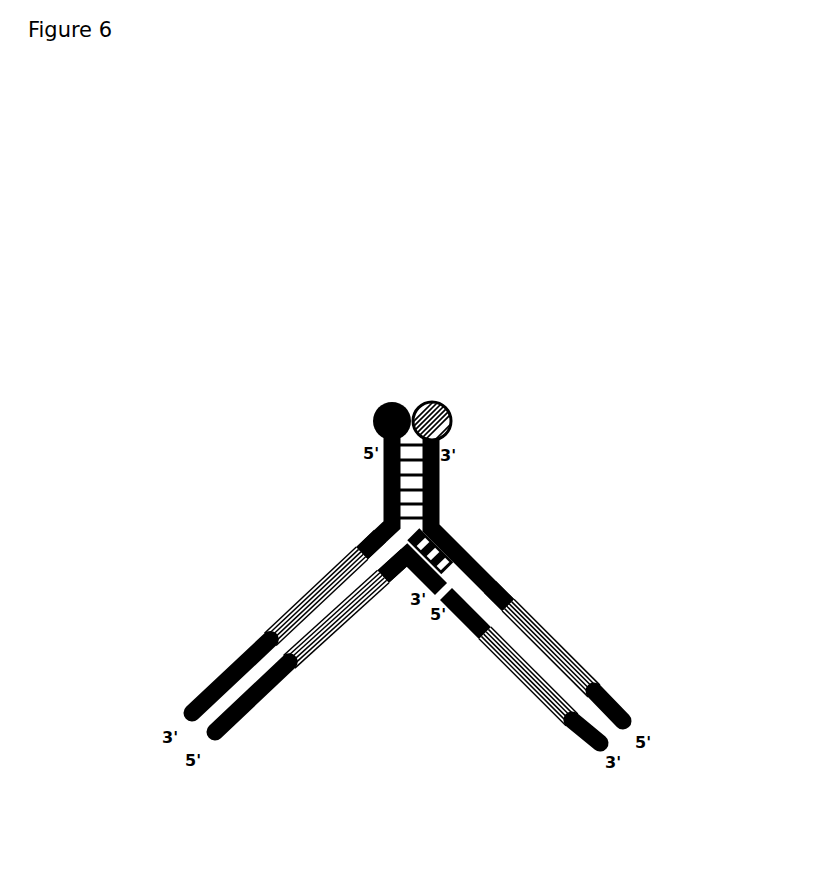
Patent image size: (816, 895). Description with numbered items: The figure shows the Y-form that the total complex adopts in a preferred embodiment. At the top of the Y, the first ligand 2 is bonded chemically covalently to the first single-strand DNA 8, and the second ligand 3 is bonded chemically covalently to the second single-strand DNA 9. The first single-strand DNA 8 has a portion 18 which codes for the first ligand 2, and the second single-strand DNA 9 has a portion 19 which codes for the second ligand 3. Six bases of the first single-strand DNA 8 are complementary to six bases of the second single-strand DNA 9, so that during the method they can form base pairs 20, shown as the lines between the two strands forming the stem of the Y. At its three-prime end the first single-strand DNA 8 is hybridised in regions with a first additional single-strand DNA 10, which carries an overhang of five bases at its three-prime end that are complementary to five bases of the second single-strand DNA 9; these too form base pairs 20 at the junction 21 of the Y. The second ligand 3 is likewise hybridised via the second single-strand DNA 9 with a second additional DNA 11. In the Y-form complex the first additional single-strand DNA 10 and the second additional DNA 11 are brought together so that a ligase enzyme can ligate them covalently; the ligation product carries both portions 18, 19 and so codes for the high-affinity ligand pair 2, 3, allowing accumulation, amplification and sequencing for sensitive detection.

The first ligand 2 is at (353, 422).
The second ligand 3 is at (468, 422).
The base pairs 20 is at (360, 490).
The junction duplex region 21 is at (469, 536).
The portion which codes for the first ligand 18 is at (303, 590).
The portion which codes for the second ligand 19 is at (569, 628).
The first single-strand DNA 8 is at (167, 715).
The second single-strand DNA 9 is at (640, 722).
The first additional single-strand DNA 10 is at (212, 762).
The second additional DNA 11 is at (578, 748).